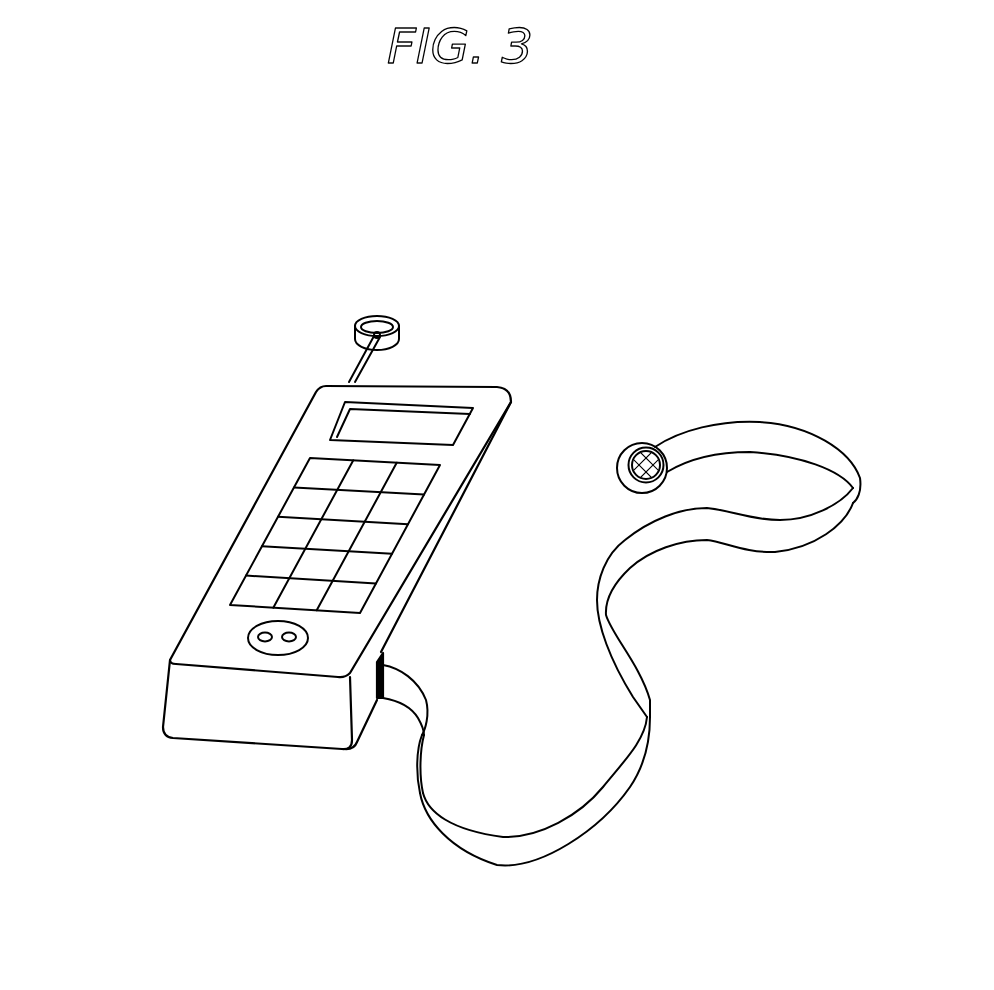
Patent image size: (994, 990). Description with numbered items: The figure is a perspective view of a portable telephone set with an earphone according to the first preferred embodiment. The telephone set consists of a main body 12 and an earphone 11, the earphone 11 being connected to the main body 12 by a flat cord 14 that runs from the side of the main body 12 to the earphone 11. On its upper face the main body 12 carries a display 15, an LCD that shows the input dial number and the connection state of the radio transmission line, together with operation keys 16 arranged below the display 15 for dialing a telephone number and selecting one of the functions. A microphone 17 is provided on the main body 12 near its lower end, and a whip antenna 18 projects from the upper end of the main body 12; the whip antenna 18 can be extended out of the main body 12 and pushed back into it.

The earphone 11 is at (632, 448).
The main body 12 is at (460, 387).
The flat cord 14 is at (618, 793).
The display 15 is at (346, 425).
The operation keys 16 is at (290, 536).
The microphone 17 is at (273, 652).
The whip antenna 18 is at (363, 351).